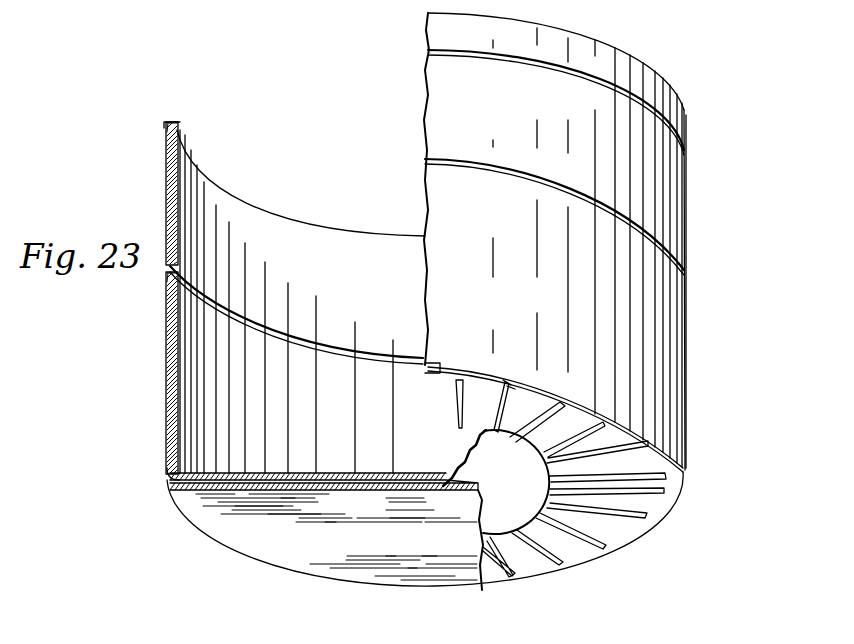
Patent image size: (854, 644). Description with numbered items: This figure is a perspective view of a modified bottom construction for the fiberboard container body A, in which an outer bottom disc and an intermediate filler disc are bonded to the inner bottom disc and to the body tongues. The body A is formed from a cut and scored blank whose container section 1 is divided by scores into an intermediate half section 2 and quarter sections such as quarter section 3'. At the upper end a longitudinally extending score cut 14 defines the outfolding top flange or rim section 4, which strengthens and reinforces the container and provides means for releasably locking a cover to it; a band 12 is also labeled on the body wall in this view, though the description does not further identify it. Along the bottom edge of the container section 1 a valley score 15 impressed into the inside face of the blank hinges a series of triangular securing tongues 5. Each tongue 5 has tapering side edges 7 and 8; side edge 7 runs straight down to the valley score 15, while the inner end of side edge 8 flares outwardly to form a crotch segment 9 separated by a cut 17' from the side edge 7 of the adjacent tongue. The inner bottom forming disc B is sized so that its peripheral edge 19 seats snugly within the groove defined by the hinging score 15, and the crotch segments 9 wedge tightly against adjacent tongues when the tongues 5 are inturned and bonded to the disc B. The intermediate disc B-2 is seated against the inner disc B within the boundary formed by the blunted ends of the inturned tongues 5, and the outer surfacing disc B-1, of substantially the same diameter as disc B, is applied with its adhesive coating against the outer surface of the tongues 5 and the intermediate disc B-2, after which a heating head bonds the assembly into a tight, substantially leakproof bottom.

The container section 1 is at (167, 312).
The intermediate half section 2 is at (480, 256).
The quarter section 3' is at (261, 301).
The outfolding top flange or rim section 4 is at (168, 143).
The securing tongues 5 is at (245, 490).
The side edge 7 is at (457, 383).
The side edge 8 is at (492, 404).
The crotch segment 9 is at (507, 383).
The band 12 is at (167, 170).
The score cut 14 is at (178, 122).
The valley score 15 is at (170, 483).
The cut 17' is at (537, 372).
The peripheral edge 19 is at (168, 477).
The container body A is at (700, 148).
The inner bottom forming disc B is at (432, 458).
The outer disc B-1 is at (330, 490).
The intermediate disc B-2 is at (535, 488).